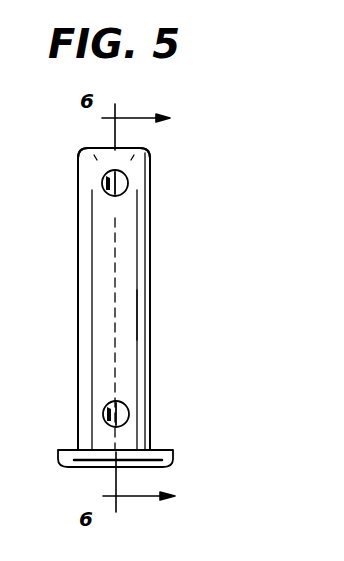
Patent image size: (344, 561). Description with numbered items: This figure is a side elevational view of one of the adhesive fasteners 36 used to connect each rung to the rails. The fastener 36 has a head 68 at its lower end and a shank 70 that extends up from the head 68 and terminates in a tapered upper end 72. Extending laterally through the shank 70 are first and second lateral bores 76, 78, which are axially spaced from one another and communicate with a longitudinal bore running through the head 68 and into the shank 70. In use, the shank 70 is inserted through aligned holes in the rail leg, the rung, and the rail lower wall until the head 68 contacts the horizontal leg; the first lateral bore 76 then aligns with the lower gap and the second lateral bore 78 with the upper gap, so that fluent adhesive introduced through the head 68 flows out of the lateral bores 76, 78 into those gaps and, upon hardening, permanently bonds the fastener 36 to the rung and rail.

The fastener 36 is at (150, 262).
The head 68 is at (165, 463).
The shank 70 is at (139, 316).
The tapered upper end 72 is at (150, 157).
The first lateral bore 76 is at (125, 408).
The second lateral bore 78 is at (122, 187).